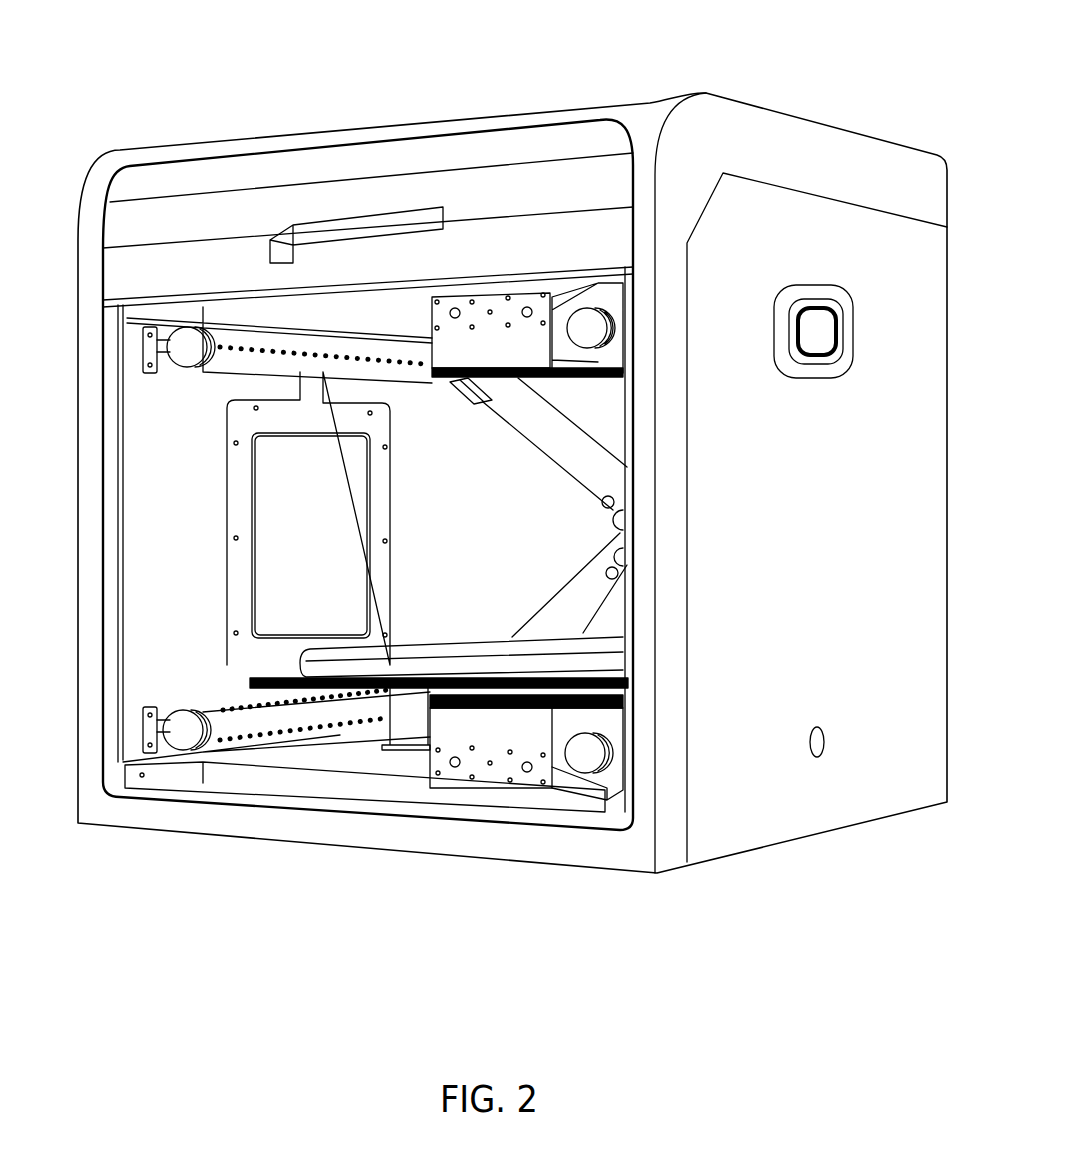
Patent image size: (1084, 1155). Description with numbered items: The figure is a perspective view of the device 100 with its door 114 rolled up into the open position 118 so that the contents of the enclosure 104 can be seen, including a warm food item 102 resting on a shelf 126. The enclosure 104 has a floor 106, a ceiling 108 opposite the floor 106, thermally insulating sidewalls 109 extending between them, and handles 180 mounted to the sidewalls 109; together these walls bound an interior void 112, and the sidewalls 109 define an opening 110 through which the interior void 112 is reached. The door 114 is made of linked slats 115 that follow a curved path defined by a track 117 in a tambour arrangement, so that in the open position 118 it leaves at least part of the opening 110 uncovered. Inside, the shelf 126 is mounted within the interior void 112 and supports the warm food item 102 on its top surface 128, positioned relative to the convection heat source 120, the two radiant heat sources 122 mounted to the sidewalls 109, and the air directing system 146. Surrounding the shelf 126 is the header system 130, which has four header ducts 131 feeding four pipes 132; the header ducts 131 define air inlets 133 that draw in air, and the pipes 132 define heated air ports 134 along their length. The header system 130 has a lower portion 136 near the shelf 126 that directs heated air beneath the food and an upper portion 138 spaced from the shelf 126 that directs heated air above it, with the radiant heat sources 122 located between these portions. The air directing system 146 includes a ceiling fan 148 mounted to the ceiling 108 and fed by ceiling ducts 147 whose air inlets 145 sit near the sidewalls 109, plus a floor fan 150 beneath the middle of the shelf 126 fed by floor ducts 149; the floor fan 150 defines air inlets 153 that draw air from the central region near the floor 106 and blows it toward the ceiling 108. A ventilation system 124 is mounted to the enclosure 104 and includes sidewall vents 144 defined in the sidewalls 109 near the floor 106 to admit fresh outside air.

The device 100 is at (812, 62).
The warm food item 102 is at (447, 646).
The enclosure 104 is at (150, 525).
The floor 106 is at (400, 807).
The ceiling 108 is at (394, 302).
The sidewalls 109 is at (745, 506).
The opening 110 is at (112, 490).
The interior void 112 is at (140, 625).
The door 114 is at (437, 147).
The linked slats 115 is at (598, 133).
The track 117 is at (117, 458).
The open position 118 is at (176, 150).
The convection heat source 120 is at (533, 472).
The radiant heat source 122 is at (386, 510).
The ventilation system 124 is at (826, 728).
The shelf 126 is at (248, 682).
The top surface 128 is at (297, 668).
The header system 130 is at (397, 392).
The header ducts 131 is at (587, 487).
The pipes 132 is at (452, 385).
The air inlets 133 is at (620, 535).
The heated air ports 134 is at (237, 352).
The lower portion 136 is at (174, 709).
The upper portion 138 is at (198, 383).
The sidewall vents 144 is at (826, 745).
The air inlets 145 is at (612, 300).
The air directing system 146 is at (527, 778).
The ceiling ducts 147 is at (240, 306).
The ceiling fan 148 is at (494, 304).
The floor ducts 149 is at (310, 777).
The floor fan 150 is at (448, 762).
The air inlets 153 is at (470, 748).
The handles 180 is at (840, 337).